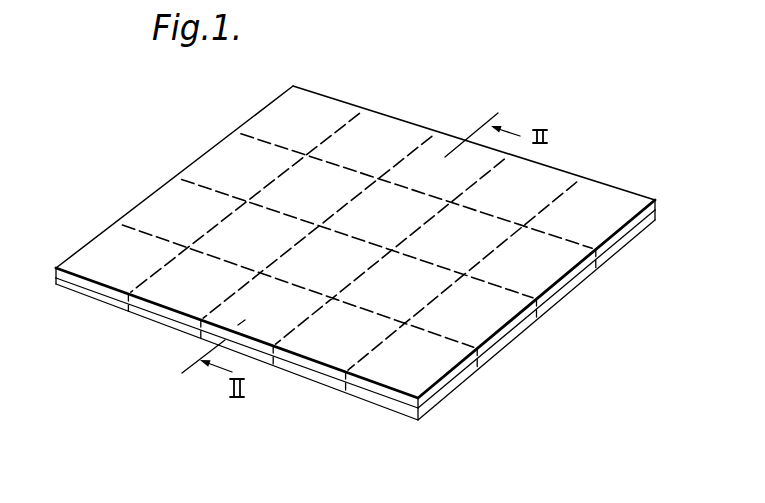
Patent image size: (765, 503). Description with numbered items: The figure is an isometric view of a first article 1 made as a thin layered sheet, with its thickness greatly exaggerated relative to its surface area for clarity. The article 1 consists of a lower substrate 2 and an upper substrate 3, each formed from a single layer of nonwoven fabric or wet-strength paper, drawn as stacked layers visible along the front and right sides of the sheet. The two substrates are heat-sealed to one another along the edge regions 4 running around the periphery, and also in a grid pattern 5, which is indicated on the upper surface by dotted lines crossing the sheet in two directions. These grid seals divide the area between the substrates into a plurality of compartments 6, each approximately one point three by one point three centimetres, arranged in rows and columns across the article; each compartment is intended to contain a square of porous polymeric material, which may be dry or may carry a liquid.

The first article 1 is at (133, 202).
The lower substrate 2 is at (87, 296).
The upper substrate 3 is at (76, 269).
The edge regions 4 is at (447, 387).
The grid pattern 5 is at (553, 194).
The compartments 6 is at (542, 283).